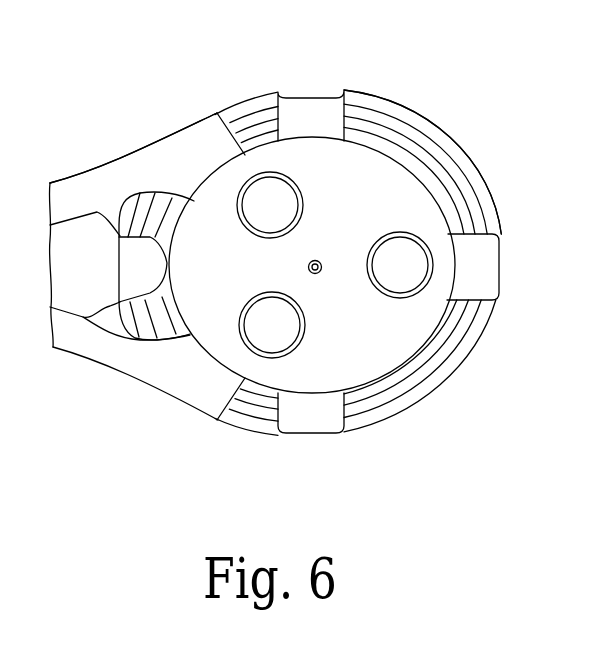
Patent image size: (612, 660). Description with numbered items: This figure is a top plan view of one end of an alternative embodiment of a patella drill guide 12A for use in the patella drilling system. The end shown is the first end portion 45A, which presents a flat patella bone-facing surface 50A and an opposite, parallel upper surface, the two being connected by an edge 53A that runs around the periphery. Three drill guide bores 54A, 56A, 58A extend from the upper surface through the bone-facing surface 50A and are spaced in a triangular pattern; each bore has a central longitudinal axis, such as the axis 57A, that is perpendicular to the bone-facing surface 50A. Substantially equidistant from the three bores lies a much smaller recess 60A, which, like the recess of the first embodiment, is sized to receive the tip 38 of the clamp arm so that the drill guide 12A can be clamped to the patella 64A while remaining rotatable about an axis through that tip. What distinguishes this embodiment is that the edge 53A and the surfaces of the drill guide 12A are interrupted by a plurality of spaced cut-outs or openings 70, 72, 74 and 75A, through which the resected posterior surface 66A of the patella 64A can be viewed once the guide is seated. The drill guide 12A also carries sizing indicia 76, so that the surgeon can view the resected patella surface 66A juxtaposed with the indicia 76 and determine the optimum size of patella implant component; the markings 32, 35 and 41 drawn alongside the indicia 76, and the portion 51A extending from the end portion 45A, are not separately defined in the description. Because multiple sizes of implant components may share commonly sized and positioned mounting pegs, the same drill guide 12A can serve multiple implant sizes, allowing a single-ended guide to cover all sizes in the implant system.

The patella drill guide 12A is at (60, 172).
The housing 51A is at (53, 348).
The cut-out or opening 75A is at (137, 237).
The patella 64A is at (118, 260).
The patella bone-facing surface 50A is at (237, 313).
The first end portion 45A is at (421, 119).
The sizing indicia 76 is at (381, 158).
The first layer 32 is at (352, 153).
The second layer 35 is at (440, 190).
The tip 38 is at (395, 325).
The fourth layer 41 is at (358, 357).
The resected posterior surface 66A is at (404, 274).
The cut-out or opening 72 is at (280, 104).
The cut-out or opening 74 is at (295, 419).
The cut-out or opening 70 is at (496, 292).
The edge 53A is at (457, 146).
The drill guide bore 56A is at (266, 203).
The central longitudinal axis 57A is at (276, 213).
The drill guide bore 58A is at (264, 325).
The drill guide bore 54A is at (400, 266).
The recess 60A is at (307, 267).